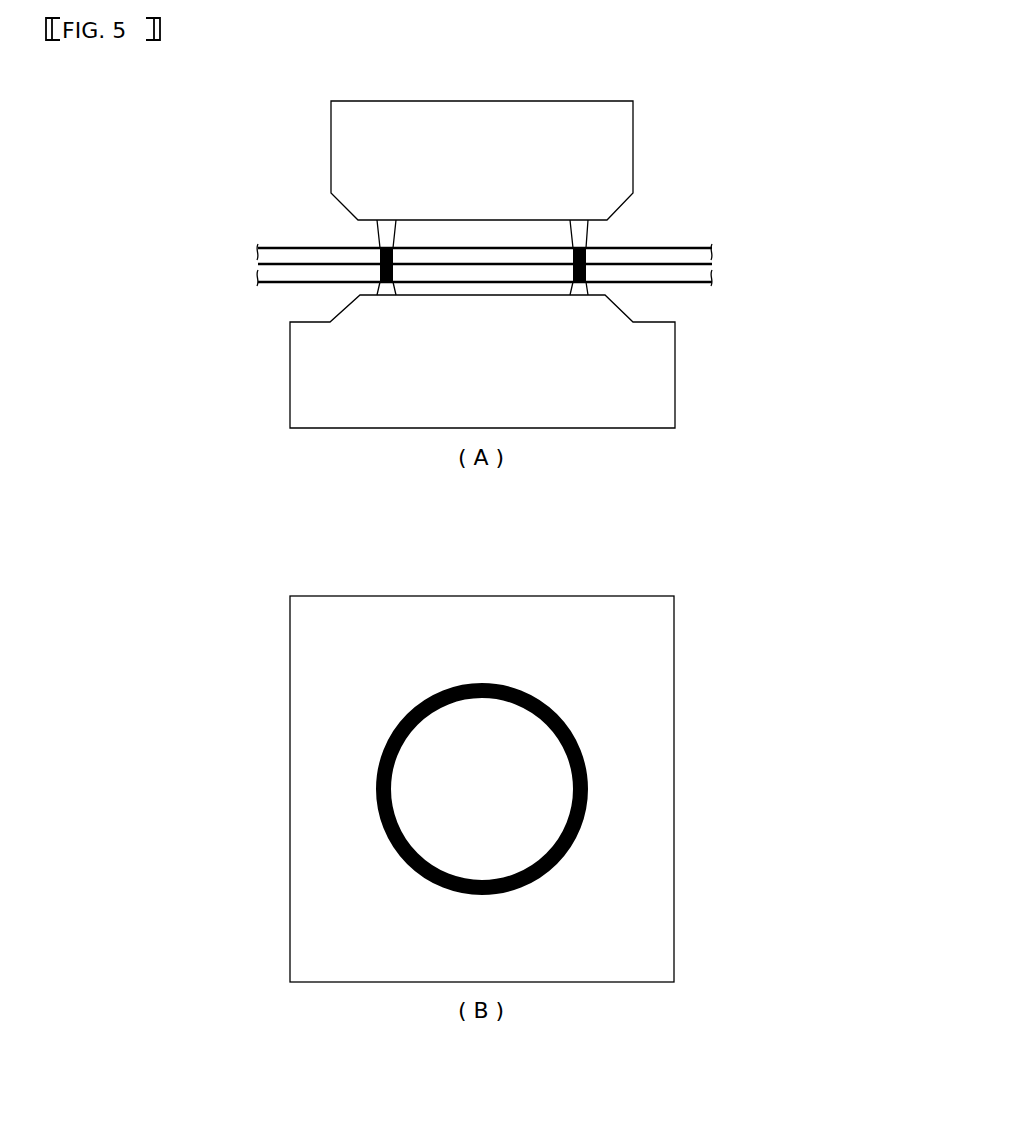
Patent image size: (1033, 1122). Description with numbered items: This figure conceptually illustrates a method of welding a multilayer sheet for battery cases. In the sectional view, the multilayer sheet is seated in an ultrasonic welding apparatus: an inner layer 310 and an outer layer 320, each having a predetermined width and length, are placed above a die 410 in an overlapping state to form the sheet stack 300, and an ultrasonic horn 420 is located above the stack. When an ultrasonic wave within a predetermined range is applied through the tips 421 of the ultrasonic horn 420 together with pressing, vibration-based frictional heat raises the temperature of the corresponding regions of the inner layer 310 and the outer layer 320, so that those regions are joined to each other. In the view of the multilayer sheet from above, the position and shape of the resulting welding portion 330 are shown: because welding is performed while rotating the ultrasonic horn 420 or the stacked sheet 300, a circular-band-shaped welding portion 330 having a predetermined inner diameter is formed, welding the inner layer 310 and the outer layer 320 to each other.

The sheet stack / workpiece 300 is at (790, 250).
The inner layer 310 is at (690, 251).
The outer layer 320 is at (688, 271).
The welding portion 330 is at (597, 272).
The die 410 is at (305, 375).
The ultrasonic horn 420 is at (345, 148).
The tips 421 is at (590, 235).